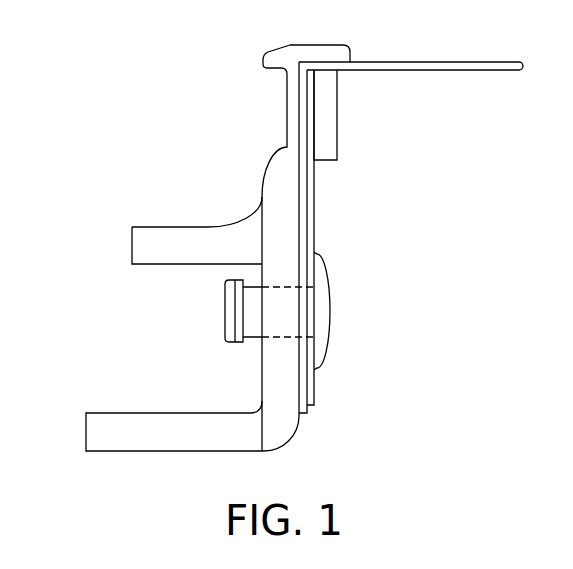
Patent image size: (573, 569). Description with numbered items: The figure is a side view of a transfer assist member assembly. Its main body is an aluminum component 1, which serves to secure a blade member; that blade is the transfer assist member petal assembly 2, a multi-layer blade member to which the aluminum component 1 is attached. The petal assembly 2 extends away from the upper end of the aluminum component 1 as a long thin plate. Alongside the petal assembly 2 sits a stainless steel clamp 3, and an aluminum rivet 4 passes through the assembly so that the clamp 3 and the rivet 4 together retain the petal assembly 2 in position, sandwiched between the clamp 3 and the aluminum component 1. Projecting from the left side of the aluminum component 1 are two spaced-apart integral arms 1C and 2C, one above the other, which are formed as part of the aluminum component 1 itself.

The aluminum component 1 is at (277, 198).
The integral arm 1C is at (148, 246).
The transfer assist member petal assembly 2 is at (417, 63).
The integral arm 2C is at (96, 431).
The stainless steel clamp 3 is at (327, 125).
The aluminum rivet 4 is at (322, 324).